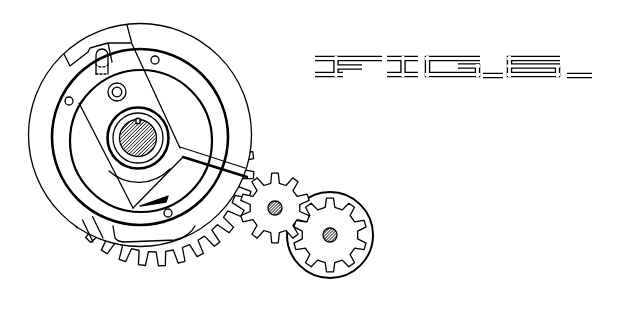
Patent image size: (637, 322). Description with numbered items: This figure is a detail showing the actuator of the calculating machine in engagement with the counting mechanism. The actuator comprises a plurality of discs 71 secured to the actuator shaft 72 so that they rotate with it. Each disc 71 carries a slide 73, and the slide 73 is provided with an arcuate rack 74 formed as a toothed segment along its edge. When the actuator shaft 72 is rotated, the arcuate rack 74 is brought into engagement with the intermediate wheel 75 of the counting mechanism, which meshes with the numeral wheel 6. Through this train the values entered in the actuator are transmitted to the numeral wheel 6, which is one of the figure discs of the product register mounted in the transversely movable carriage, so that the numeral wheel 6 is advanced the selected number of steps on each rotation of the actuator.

The disc 71 is at (233, 101).
The actuator shaft 72 is at (152, 131).
The slide 73 is at (122, 186).
The arcuate rack 74 is at (165, 262).
The intermediate wheel 75 is at (286, 176).
The numeral wheel 6 is at (372, 220).